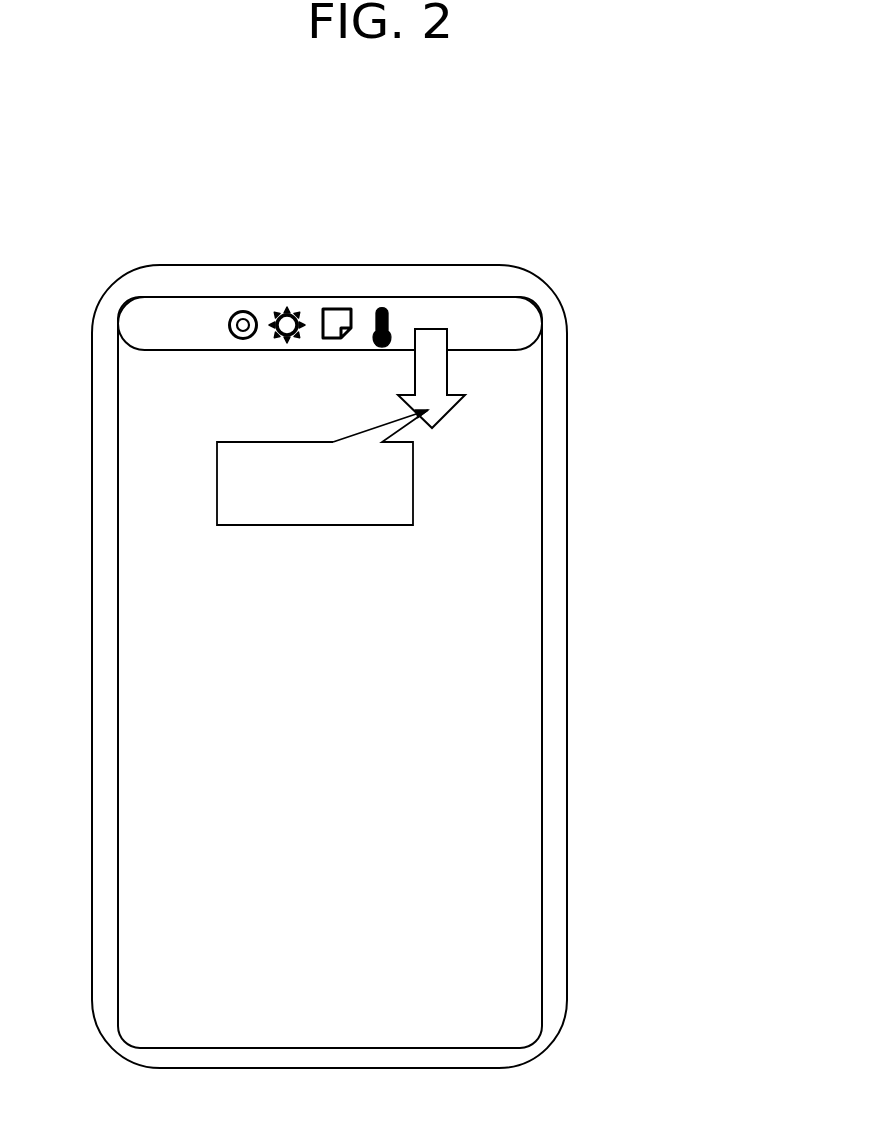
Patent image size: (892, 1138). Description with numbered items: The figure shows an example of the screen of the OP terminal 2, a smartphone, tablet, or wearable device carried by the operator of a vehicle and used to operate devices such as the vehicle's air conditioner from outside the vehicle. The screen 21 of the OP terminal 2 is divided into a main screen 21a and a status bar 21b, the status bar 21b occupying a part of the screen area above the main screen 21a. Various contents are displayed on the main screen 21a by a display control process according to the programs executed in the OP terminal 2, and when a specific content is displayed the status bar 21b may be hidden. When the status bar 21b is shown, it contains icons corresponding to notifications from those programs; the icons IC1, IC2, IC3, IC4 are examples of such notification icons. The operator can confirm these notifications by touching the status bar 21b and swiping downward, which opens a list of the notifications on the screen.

The OP terminal 2 is at (560, 237).
The screen 21 is at (450, 613).
The main screen 21a is at (515, 448).
The status bar 21b is at (414, 334).
The icon IC1 is at (240, 309).
The icon IC2 is at (277, 307).
The icon IC3 is at (335, 307).
The icon IC4 is at (375, 307).